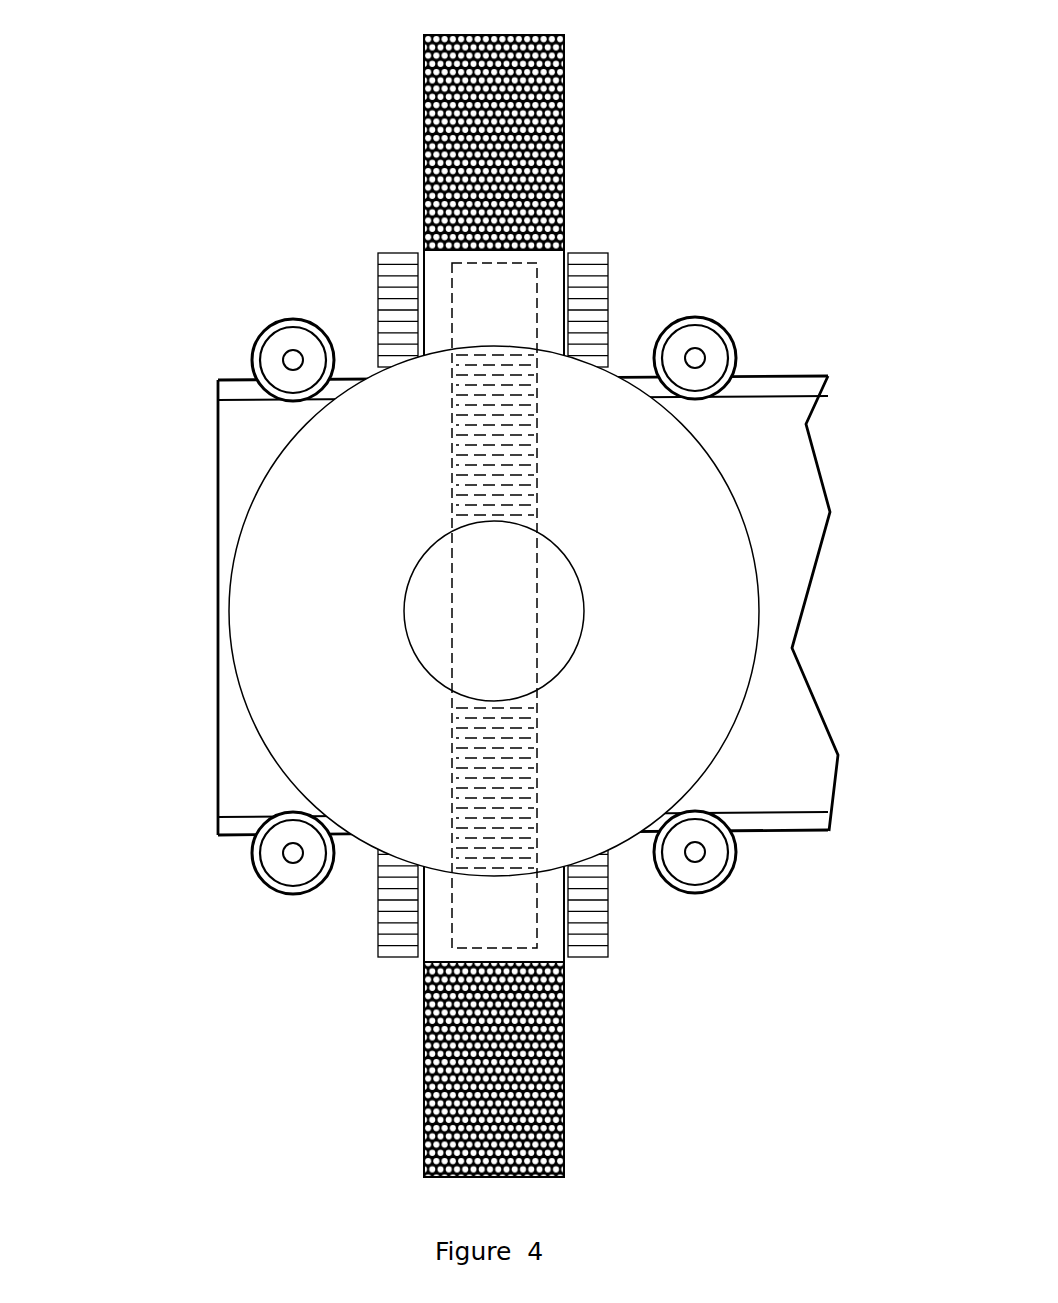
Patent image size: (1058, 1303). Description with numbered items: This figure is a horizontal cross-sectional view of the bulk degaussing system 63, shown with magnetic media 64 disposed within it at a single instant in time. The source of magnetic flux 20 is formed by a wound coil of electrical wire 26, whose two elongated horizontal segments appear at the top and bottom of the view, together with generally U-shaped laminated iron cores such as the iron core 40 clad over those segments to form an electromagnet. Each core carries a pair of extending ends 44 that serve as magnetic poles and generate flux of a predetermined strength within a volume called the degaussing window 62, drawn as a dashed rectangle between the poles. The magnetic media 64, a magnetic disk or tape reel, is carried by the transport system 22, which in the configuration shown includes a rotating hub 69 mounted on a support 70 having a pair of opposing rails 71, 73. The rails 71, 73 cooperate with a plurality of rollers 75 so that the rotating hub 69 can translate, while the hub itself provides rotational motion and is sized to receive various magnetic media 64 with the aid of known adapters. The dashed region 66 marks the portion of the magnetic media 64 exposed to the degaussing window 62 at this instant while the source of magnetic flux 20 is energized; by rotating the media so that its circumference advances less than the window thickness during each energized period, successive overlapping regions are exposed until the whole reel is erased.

The source of magnetic flux 20 is at (371, 236).
The transport system 22 is at (236, 852).
The wound coil of electrical wire 26 is at (565, 130).
The laminated iron core 40 is at (388, 280).
The extending end 44 is at (390, 328).
The degaussing window 62 is at (538, 281).
The bulk degaussing system 63 is at (180, 207).
The magnetic media 64 is at (598, 494).
The dashed region 66 is at (480, 768).
The rotating hub 69 is at (584, 608).
The support 70 is at (238, 742).
The rail 71 is at (807, 822).
The rail 73 is at (807, 378).
The rollers 75 is at (268, 355).